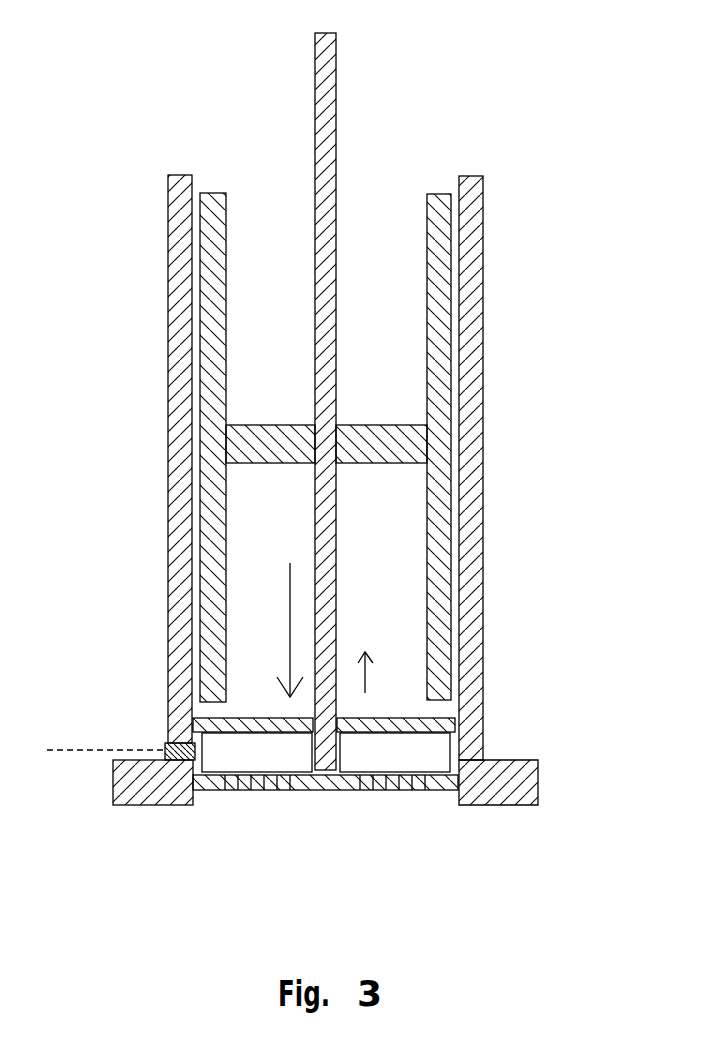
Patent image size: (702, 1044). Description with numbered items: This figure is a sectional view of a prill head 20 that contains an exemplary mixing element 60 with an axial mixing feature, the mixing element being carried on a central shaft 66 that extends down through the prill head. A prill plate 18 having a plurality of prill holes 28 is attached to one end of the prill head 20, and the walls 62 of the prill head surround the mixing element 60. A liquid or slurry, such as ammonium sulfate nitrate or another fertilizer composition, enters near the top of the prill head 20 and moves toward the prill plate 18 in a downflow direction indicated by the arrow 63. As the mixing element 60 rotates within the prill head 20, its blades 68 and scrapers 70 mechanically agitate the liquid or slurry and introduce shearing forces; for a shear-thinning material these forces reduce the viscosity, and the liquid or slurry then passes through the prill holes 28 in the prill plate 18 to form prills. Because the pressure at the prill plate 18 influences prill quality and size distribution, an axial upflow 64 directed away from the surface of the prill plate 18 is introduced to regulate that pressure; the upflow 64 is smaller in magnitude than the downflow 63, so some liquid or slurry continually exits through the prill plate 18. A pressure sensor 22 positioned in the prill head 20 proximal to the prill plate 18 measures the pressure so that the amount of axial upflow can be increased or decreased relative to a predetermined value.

The prill plate 18 is at (325, 845).
The prill head 20 is at (368, 490).
The pressure sensor 22 is at (165, 748).
The prill holes 28 is at (423, 790).
The mixing element 60 is at (381, 401).
The walls 62 is at (475, 362).
The downflow direction 63 is at (290, 628).
The axial upflow 64 is at (367, 670).
The rod 66 is at (315, 95).
The blades 68 is at (415, 753).
The scrapers 70 is at (440, 562).